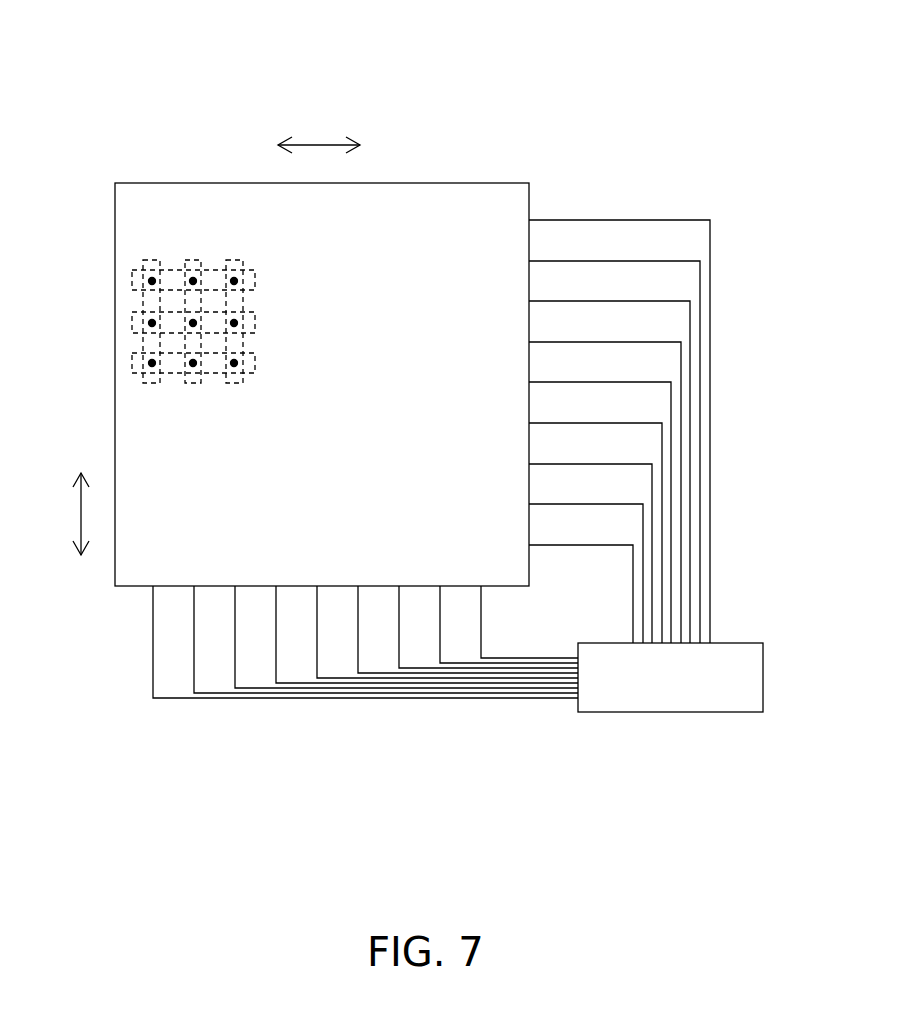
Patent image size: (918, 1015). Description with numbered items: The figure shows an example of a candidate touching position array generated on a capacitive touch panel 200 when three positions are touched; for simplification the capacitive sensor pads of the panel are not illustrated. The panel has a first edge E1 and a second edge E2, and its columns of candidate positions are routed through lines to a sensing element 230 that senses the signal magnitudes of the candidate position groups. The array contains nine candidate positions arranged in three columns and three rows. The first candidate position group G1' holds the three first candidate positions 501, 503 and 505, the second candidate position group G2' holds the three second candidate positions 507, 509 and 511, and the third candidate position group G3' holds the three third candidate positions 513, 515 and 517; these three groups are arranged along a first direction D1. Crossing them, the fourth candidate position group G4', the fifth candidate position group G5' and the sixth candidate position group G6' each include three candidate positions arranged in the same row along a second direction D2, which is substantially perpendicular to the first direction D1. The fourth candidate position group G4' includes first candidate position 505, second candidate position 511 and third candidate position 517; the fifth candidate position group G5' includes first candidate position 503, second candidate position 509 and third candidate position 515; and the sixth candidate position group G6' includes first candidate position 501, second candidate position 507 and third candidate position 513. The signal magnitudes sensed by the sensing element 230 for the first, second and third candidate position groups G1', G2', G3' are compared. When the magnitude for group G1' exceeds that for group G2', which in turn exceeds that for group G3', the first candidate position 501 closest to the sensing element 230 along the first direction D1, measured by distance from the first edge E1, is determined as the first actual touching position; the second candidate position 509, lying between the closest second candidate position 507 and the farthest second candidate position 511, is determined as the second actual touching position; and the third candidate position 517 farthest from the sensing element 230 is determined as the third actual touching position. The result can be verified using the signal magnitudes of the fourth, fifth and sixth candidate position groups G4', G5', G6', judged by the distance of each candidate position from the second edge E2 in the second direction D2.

The capacitive touch panel 200 is at (105, 128).
The sensing element 230 is at (670, 713).
The first candidate position 501 is at (150, 363).
The first candidate position 503 is at (150, 323).
The first candidate position 505 is at (150, 281).
The second candidate position 507 is at (193, 366).
The second candidate position 509 is at (194, 321).
The second candidate position 511 is at (193, 278).
The third candidate position 513 is at (236, 363).
The third candidate position 515 is at (236, 323).
The third candidate position 517 is at (236, 281).
The first edge E1 is at (118, 588).
The second edge E2 is at (531, 190).
The first candidate position group G1' is at (102, 350).
The second candidate position group G2' is at (222, 374).
The third candidate position group G3' is at (260, 361).
The fourth candidate position group G4' is at (251, 260).
The fifth candidate position group G5' is at (259, 310).
The sixth candidate position group G6' is at (258, 382).
The first direction D1 is at (67, 514).
The second direction D2 is at (319, 132).